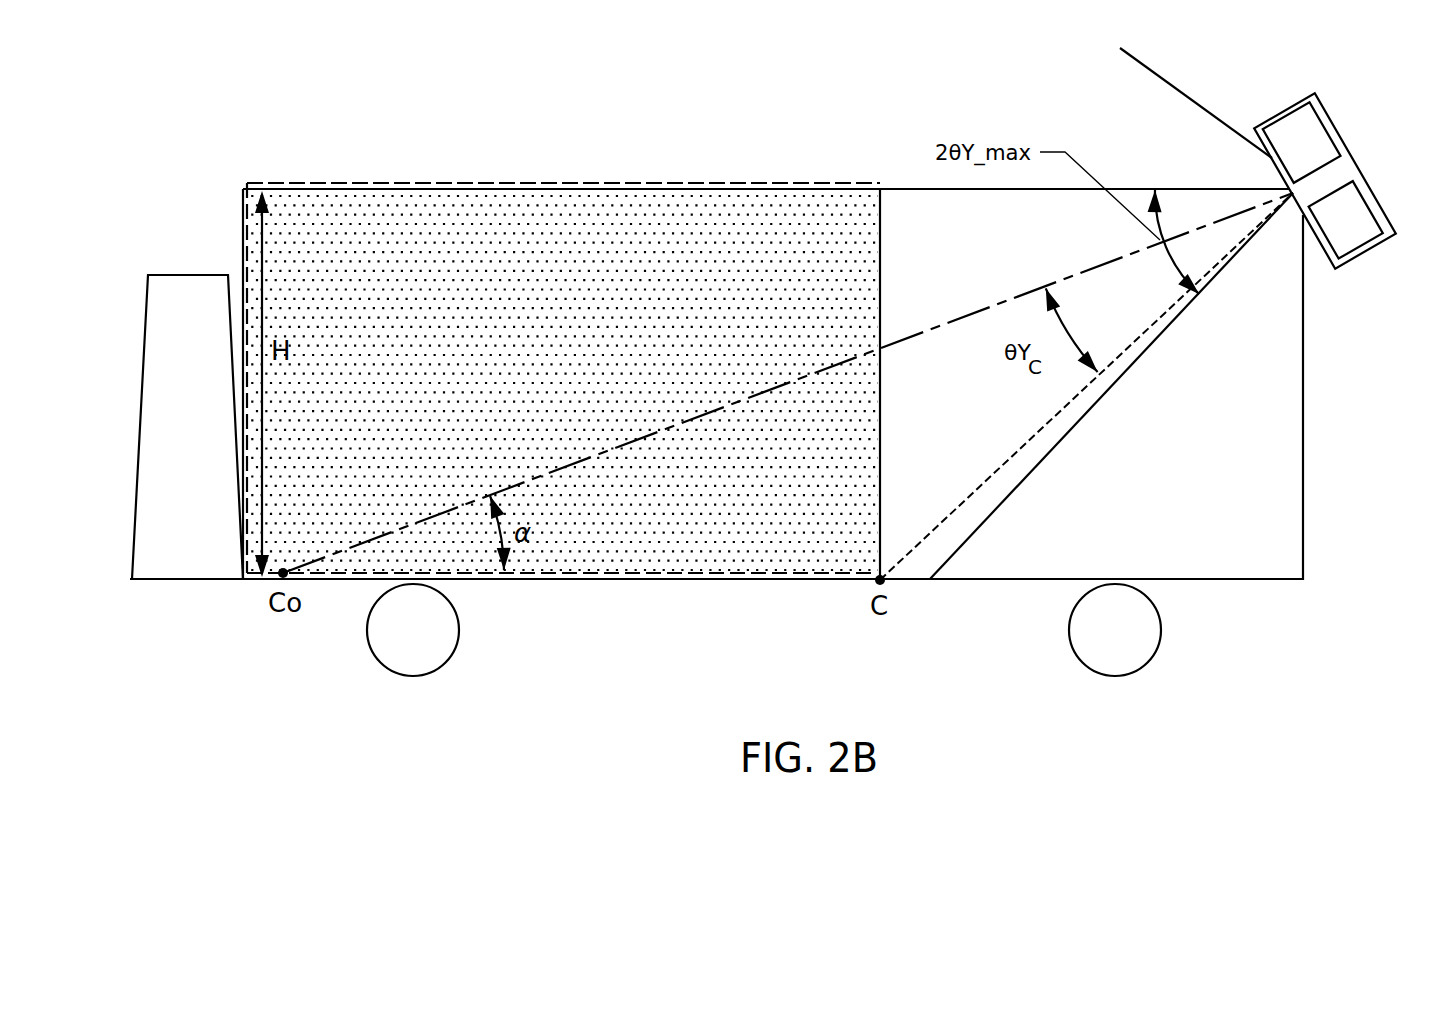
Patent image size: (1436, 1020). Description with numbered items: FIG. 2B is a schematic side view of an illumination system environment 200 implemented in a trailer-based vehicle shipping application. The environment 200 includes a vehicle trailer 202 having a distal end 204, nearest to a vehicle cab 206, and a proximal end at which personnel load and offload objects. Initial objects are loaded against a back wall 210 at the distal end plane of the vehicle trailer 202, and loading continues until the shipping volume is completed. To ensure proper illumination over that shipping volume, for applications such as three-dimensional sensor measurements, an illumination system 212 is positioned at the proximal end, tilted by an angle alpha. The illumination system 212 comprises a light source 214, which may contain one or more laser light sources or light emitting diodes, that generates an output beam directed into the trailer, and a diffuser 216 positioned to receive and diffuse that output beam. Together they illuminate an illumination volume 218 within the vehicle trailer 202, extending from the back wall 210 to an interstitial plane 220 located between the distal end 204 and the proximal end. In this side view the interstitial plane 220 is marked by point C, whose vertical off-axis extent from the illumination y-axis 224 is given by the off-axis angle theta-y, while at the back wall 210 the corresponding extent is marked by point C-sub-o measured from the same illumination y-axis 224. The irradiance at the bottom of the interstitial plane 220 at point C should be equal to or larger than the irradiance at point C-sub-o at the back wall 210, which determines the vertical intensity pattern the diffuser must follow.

The illumination system environment 200 is at (205, 132).
The vehicle trailer 202 is at (522, 182).
The distal end 204 is at (243, 253).
The vehicle cab 206 is at (153, 432).
The back wall 210 is at (246, 465).
The illumination system 212 is at (1354, 160).
The light source 214 is at (1370, 231).
The diffuser 216 is at (1320, 148).
The illumination volume 218 is at (556, 361).
The interstitial plane 220 is at (883, 248).
The illumination y-axis 224 is at (728, 405).